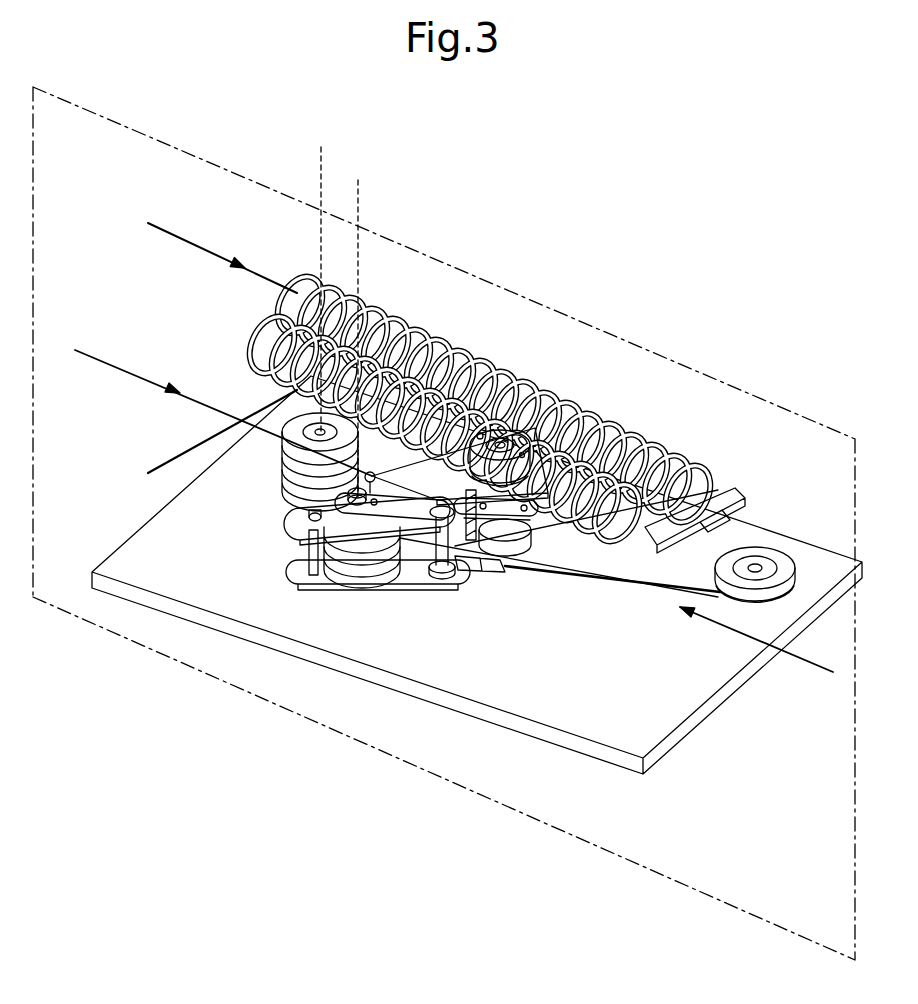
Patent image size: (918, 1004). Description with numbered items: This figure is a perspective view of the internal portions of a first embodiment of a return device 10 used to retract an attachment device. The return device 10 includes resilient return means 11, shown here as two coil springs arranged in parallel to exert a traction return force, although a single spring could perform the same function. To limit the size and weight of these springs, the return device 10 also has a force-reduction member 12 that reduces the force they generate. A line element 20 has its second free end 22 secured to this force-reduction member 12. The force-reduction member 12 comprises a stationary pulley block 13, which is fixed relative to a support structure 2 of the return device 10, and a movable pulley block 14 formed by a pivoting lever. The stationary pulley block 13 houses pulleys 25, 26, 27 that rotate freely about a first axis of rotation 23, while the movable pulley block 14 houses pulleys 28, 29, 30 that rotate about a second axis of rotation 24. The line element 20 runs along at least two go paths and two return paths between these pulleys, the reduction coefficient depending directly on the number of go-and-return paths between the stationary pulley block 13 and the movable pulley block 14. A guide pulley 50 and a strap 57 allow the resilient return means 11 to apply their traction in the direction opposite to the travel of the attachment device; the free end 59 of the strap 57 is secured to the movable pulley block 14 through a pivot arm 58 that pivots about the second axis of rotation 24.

The support structure 2 is at (642, 712).
The return device 10 is at (662, 392).
The resilient return means 11 is at (462, 300).
The force-reduction member 12 is at (266, 549).
The stationary pulley block 13 is at (258, 504).
The movable pulley block 14 is at (367, 600).
The line element 20 is at (148, 473).
The second free end 22 is at (277, 399).
The first axis of rotation 23 is at (309, 173).
The second axis of rotation 24 is at (372, 205).
The pulley 25 is at (290, 452).
The pulley 26 is at (290, 468).
The pulley 27 is at (290, 480).
The pulley 28 is at (340, 577).
The pulley 29 is at (350, 572).
The pulley 30 is at (400, 580).
The guide pulley 50 is at (784, 562).
The strap 57 is at (660, 580).
The pivot arm 58 is at (443, 587).
The free end 59 is at (487, 567).